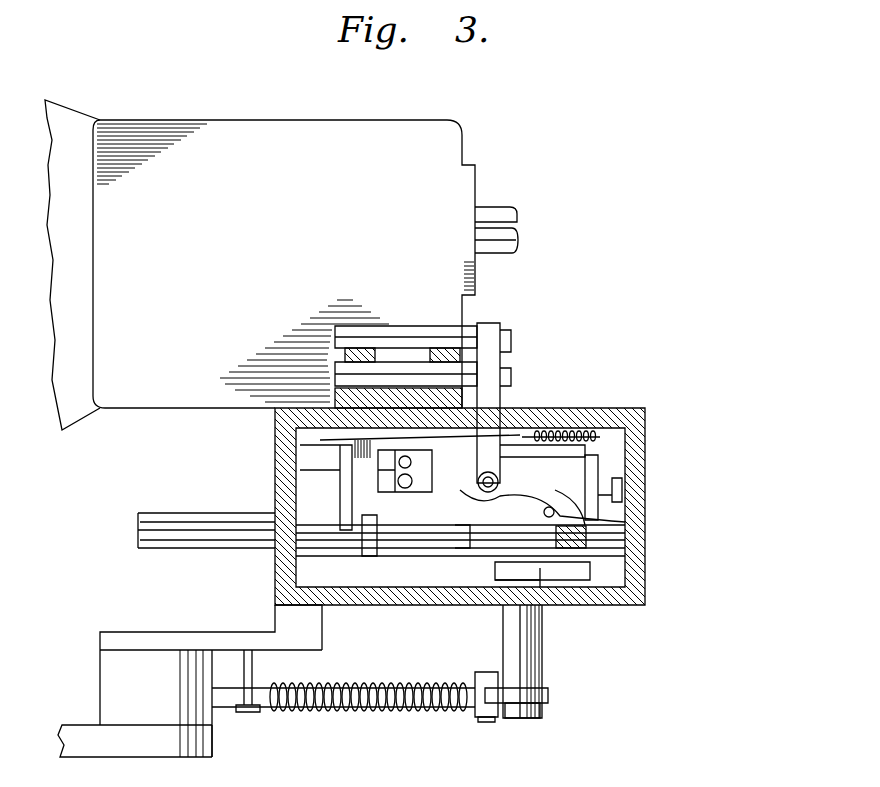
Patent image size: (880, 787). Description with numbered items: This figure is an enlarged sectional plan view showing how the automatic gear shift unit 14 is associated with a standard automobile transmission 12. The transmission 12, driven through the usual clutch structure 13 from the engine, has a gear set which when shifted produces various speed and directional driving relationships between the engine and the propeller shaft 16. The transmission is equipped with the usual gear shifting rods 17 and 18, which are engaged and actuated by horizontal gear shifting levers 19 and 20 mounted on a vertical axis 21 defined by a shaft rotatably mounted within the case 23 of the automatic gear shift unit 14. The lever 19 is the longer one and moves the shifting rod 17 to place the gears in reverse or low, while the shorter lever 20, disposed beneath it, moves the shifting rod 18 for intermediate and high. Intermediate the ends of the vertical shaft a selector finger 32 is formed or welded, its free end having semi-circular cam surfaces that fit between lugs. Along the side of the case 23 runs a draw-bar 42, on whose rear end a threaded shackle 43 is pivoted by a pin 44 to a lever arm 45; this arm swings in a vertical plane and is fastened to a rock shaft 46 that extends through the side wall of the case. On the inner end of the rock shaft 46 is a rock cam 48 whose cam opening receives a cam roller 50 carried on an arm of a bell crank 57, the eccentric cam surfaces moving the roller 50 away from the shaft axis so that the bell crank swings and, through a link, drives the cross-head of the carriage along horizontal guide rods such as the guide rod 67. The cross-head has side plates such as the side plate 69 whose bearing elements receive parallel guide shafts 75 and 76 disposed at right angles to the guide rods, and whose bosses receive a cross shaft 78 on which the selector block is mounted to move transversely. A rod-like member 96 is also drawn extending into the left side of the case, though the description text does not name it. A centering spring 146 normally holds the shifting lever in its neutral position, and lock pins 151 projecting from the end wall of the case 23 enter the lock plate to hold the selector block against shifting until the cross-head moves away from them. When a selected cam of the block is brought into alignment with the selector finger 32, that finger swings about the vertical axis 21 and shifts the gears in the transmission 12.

The transmission 12 is at (448, 128).
The clutch structure 13 is at (58, 116).
The automatic gear shift unit 14 is at (659, 439).
The propeller shaft 16 is at (500, 214).
The gear shifting rod 17 is at (512, 376).
The gear shifting rod 18 is at (457, 344).
The gear shifting lever 19 is at (502, 334).
The gear shifting lever 20 is at (506, 410).
The vertical axis 21 is at (500, 482).
The case 23 is at (650, 412).
The selector finger 32 is at (90, 725).
The draw-bar 42 is at (228, 700).
The threaded shackle 43 is at (480, 720).
The pin 44 is at (486, 722).
The lever arm 45 is at (550, 694).
The rock shaft 46 is at (540, 716).
The rock cam 48 is at (540, 574).
The cam roller 50 is at (496, 562).
The bell crank 57 is at (506, 608).
The guide rod 67 is at (590, 542).
The side plate 69 is at (445, 542).
The guide shaft 75 is at (345, 448).
The guide shaft 76 is at (405, 478).
The cross shaft 78 is at (556, 516).
The actuating rod 96 is at (182, 514).
The centering spring 146 is at (566, 432).
The lock pins 151 is at (600, 498).